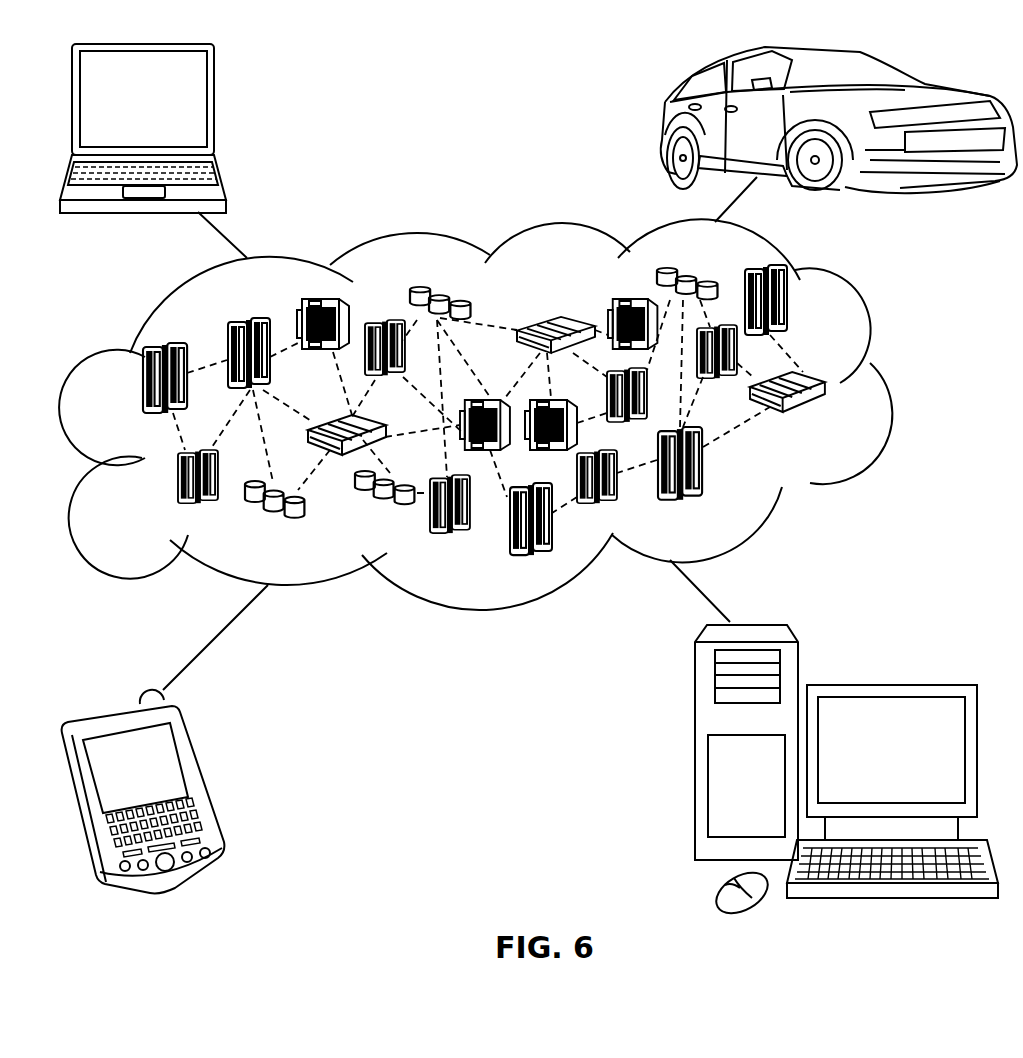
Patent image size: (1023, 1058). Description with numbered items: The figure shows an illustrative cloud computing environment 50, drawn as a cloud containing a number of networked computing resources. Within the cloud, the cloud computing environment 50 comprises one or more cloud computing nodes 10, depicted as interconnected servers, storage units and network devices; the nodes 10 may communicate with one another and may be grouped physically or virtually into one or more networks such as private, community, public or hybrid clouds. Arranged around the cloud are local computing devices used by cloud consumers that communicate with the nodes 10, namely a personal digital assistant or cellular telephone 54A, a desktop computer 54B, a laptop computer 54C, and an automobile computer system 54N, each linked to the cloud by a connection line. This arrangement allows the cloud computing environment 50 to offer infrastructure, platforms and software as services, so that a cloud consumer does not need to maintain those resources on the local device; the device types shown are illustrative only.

The laptop computer 54C is at (214, 108).
The automobile computer system 54N is at (665, 120).
The personal digital assistant (PDA) or cellular telephone 54A is at (205, 780).
The desktop computer 54B is at (887, 683).
The cloud computing environment 50 is at (890, 388).
The cloud computing node 10 is at (827, 420).